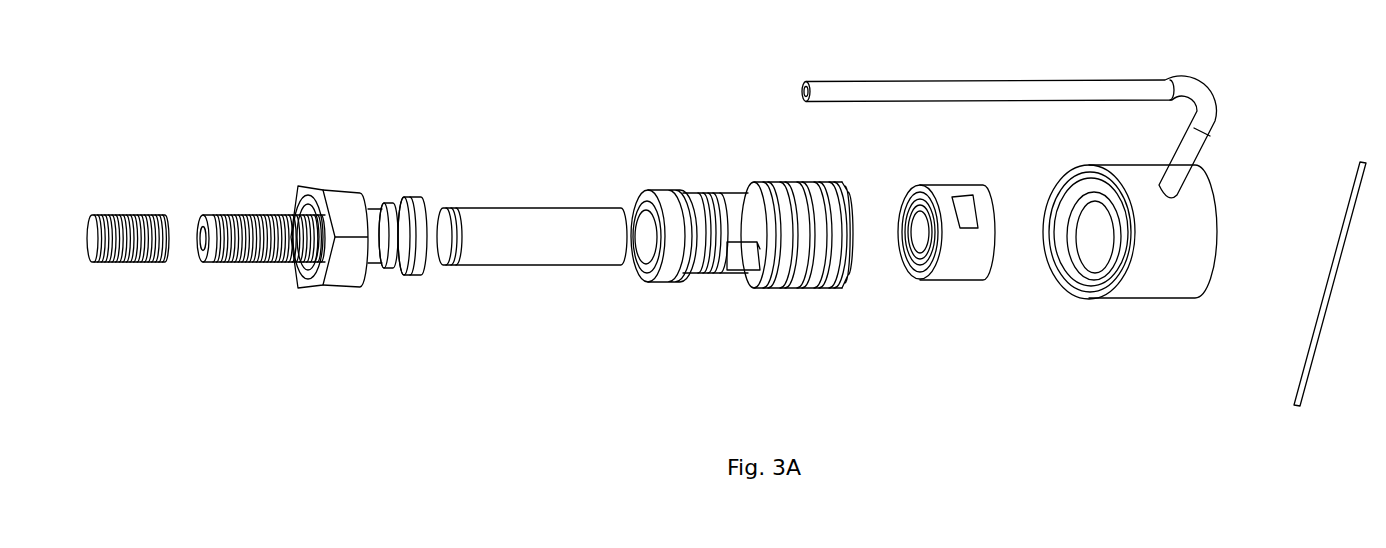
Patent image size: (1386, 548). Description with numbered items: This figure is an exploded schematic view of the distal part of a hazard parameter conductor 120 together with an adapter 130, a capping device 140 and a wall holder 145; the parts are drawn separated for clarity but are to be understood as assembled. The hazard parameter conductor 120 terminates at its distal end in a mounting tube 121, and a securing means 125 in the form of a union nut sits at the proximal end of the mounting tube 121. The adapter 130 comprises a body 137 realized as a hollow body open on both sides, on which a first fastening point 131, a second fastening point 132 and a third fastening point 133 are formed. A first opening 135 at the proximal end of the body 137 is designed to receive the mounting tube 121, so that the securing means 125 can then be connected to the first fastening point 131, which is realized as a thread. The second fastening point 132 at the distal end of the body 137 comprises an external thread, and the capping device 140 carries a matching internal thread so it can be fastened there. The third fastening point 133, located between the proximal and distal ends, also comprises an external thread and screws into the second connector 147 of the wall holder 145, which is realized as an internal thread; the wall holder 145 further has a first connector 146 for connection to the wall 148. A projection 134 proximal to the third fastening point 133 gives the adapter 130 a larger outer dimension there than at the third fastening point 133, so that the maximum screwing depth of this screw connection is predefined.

The hazard parameter conductor 120 is at (338, 238).
The mounting tube 121 is at (493, 218).
The securing means 125 is at (342, 205).
The adapter 130 is at (738, 251).
The first fastening point 131 is at (662, 287).
The second fastening point 132 is at (835, 280).
The third fastening point 133 is at (822, 244).
The projection 134 is at (760, 182).
The first opening 135 is at (645, 223).
The body 137 is at (732, 213).
The capping device 140 is at (945, 195).
The wall holder 145 is at (1129, 247).
The first connector 146 is at (1210, 272).
The second connector 147 is at (1083, 248).
The wall 148 is at (1293, 396).